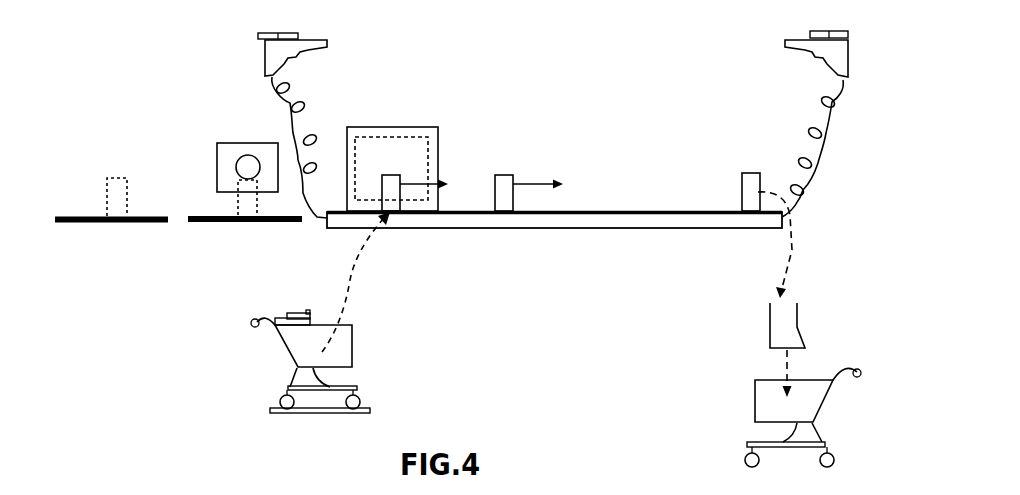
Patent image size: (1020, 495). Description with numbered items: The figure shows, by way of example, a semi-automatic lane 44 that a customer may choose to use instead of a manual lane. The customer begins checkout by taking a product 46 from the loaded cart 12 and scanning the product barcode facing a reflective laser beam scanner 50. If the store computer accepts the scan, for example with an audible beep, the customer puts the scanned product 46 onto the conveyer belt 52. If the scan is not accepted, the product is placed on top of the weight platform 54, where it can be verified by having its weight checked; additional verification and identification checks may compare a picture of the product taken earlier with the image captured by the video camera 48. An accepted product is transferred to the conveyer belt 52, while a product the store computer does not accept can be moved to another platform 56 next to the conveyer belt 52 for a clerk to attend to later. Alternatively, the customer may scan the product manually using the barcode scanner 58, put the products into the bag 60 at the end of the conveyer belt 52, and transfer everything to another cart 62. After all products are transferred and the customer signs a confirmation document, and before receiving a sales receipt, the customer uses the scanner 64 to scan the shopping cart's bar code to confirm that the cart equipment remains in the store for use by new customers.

The shopping cart 12 is at (367, 408).
The semi-automatic lane 44 is at (212, 319).
The product 46 is at (400, 178).
The video camera 48 is at (242, 147).
The reflective laser beam scanner 50 is at (402, 148).
The conveyer belt 52 is at (552, 220).
The weight platform 54 is at (237, 222).
The platform 56 is at (85, 217).
The barcode scanner 58 is at (277, 55).
The bag 60 is at (772, 328).
The cart 62 is at (815, 397).
The scanner 64 is at (838, 57).